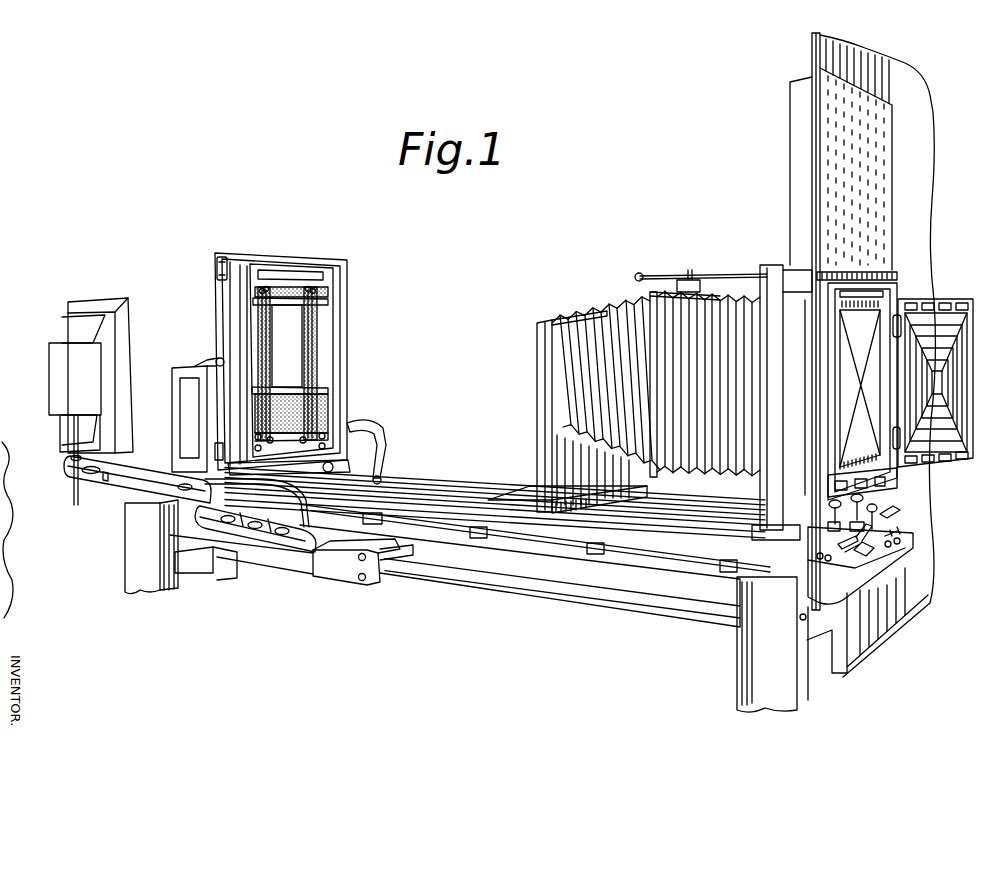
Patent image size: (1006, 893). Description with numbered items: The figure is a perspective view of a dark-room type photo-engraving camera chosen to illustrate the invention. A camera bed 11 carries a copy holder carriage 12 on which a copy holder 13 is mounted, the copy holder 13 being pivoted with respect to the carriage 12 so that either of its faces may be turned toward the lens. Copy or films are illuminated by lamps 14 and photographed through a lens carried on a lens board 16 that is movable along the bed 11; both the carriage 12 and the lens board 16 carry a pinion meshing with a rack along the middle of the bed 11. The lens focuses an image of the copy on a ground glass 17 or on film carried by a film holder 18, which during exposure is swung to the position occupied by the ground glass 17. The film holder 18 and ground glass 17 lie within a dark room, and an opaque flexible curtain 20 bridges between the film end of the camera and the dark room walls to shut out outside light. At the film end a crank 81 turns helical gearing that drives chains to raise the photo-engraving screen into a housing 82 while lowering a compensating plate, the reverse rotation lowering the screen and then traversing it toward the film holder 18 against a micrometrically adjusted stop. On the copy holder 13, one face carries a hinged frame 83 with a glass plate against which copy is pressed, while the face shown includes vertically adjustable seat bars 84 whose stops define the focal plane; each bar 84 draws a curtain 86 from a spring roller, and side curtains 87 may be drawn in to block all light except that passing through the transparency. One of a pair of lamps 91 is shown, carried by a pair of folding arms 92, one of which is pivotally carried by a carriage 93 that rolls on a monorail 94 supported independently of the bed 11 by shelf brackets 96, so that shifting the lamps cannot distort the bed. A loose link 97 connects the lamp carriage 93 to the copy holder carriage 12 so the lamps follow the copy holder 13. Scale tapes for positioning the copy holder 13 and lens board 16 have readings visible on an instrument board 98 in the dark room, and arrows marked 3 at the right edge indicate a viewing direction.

The camera bed 11 is at (653, 542).
The copy holder carriage 12 is at (172, 463).
The copy holder 13 is at (224, 310).
The lamps 14 is at (103, 312).
The lens board 16 is at (547, 323).
The ground glass 17 is at (840, 441).
The film holder 18 is at (958, 362).
The opaque flexible curtain 20 is at (915, 210).
The crank 81 is at (878, 520).
The housing 82 is at (798, 184).
The hinged frame 83 is at (214, 282).
The bars 84 is at (292, 303).
The curtain 86 is at (299, 283).
The curtains 87 is at (257, 333).
The lamps 91 is at (56, 384).
The folding arms 92 is at (142, 484).
The carriage 93 is at (330, 565).
The monorail 94 is at (278, 555).
The shelf brackets 96 is at (177, 541).
The loose link 97 is at (313, 503).
The instrument board 98 is at (875, 550).
The section view indicator 3 is at (948, 276).